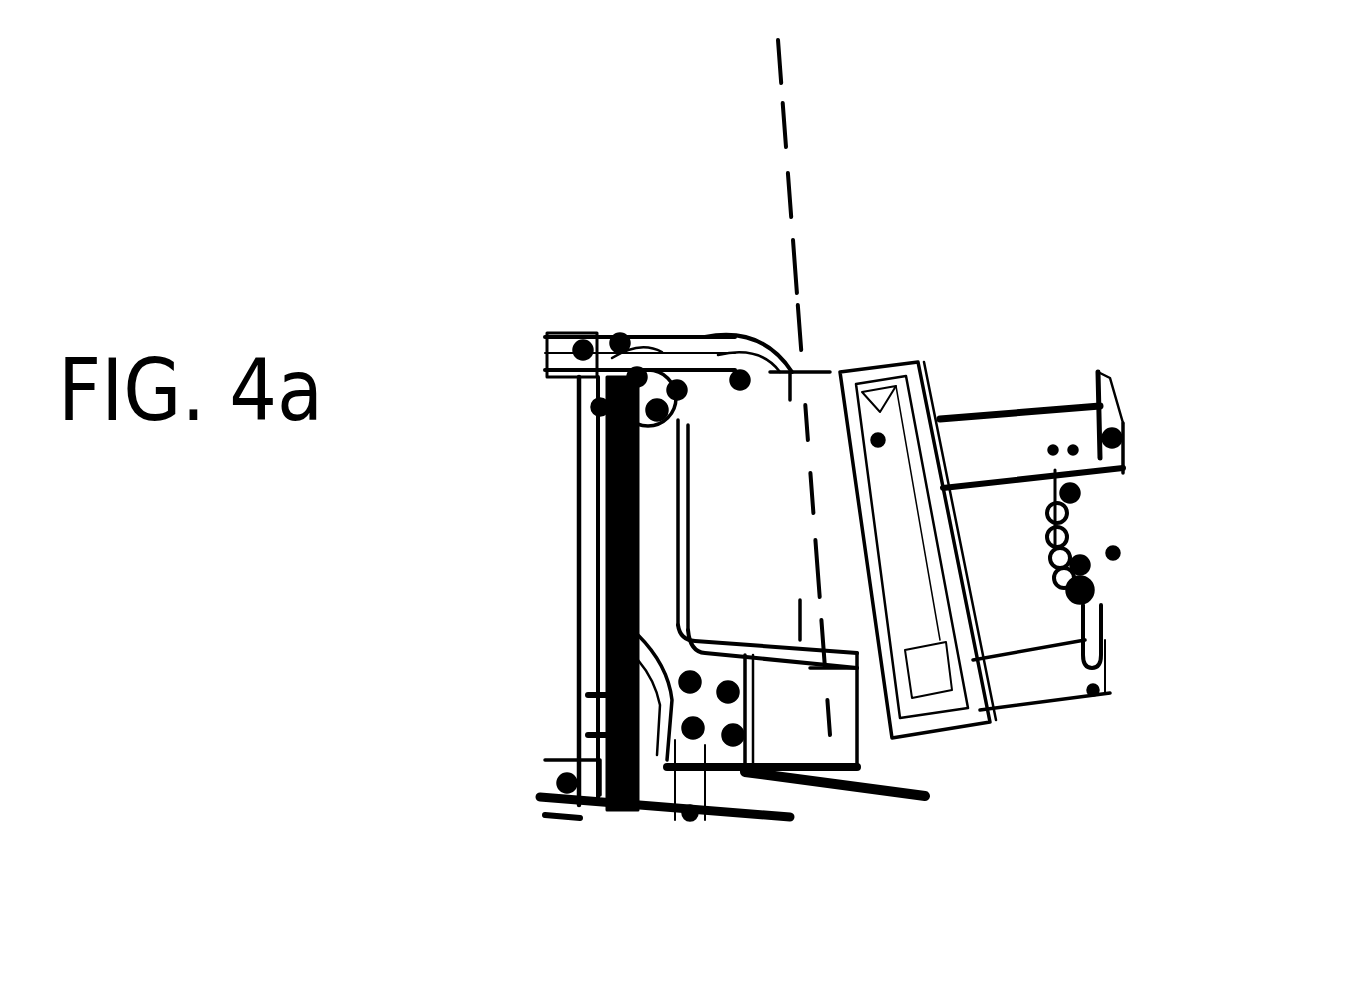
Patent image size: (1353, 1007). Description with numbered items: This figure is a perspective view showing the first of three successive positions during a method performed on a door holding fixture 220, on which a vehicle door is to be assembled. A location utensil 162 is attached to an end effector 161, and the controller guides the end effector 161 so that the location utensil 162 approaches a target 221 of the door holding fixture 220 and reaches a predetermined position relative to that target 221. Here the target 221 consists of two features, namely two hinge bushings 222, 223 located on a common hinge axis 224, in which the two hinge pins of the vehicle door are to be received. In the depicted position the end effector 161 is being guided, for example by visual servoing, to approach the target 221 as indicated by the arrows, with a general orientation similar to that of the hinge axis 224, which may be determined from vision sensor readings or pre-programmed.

The end effector 161 is at (1111, 482).
The location utensil 162 is at (920, 509).
The door holding fixture 220 is at (569, 608).
The target 221 is at (792, 616).
The hinge bushing 222 is at (808, 380).
The hinge bushing 223 is at (840, 697).
The hinge axis 224 is at (741, 371).